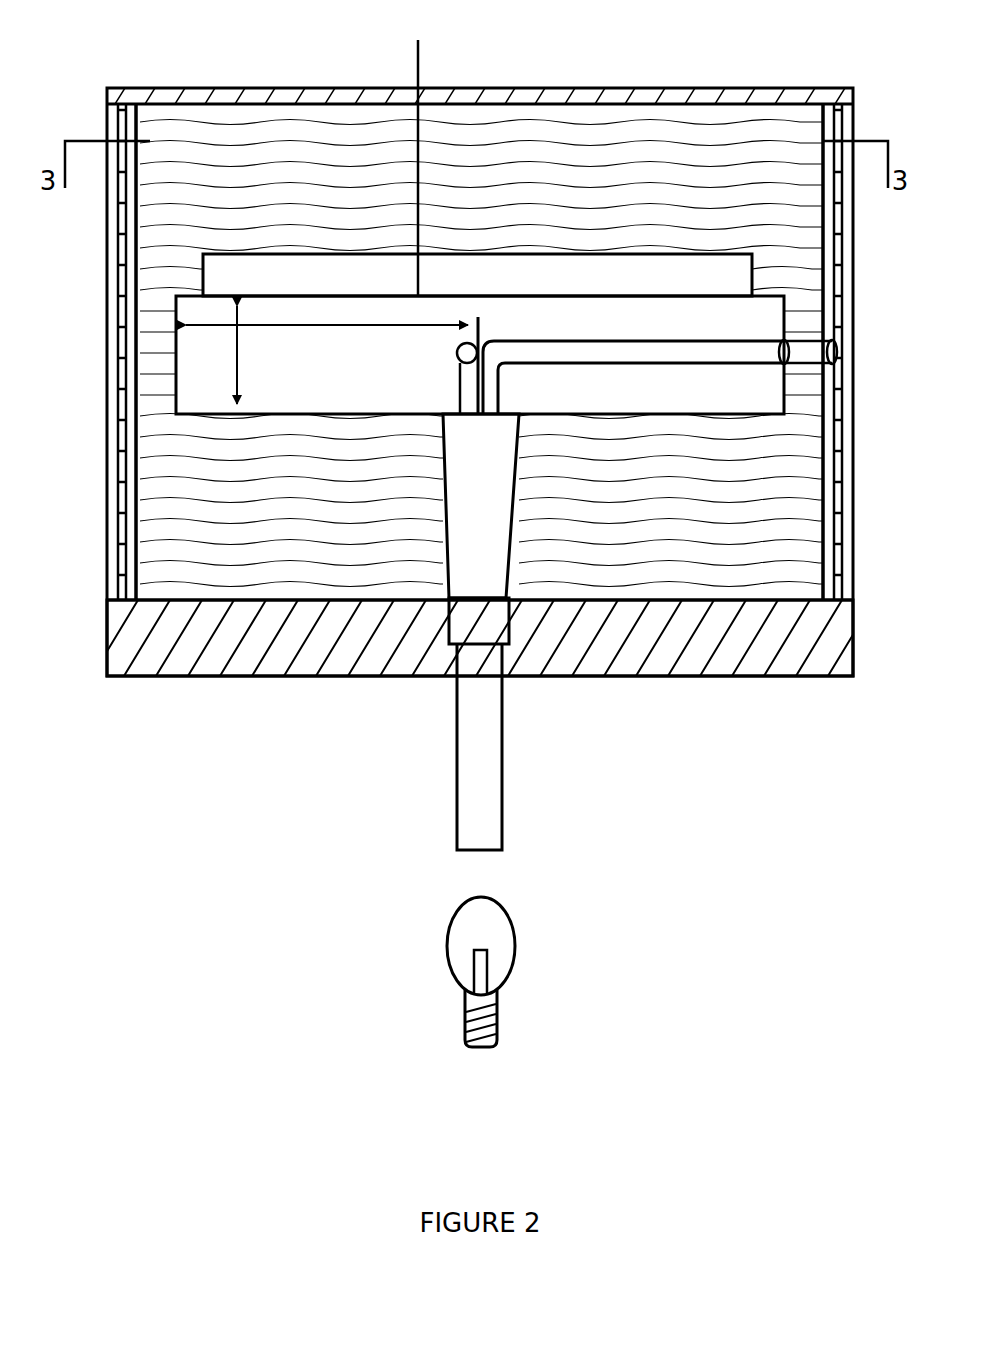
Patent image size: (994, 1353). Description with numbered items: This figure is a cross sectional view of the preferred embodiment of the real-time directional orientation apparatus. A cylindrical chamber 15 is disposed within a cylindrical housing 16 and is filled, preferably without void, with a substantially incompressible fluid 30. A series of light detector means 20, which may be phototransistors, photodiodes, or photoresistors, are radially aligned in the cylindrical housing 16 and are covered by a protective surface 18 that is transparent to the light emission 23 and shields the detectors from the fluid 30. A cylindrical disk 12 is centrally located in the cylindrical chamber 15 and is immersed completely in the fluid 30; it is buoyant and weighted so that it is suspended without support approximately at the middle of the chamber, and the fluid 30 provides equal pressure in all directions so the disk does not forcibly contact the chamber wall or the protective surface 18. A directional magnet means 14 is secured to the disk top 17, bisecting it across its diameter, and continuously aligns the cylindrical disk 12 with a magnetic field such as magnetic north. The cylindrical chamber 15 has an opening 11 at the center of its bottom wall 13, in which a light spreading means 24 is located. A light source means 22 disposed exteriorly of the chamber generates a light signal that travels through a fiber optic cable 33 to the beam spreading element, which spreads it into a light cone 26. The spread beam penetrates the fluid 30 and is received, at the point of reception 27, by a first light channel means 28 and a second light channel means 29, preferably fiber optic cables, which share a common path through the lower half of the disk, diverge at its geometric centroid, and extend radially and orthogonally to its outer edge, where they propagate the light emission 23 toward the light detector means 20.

The opening 11 is at (510, 600).
The cylindrical disk 12 is at (632, 325).
The bottom wall 13 is at (622, 600).
The directional magnet means 14 is at (551, 253).
The cylindrical chamber 15 is at (152, 232).
The cylindrical housing 16 is at (107, 325).
The disk top 17 is at (419, 151).
The protective surface 18 is at (133, 578).
The light detector means 20 is at (126, 465).
The light source means 22 is at (517, 958).
The light emission 23 is at (803, 353).
The light spreading means 24 is at (460, 627).
The light cone 26 is at (478, 507).
The point of reception 27 is at (483, 418).
The first light channel means 28 is at (647, 363).
The second light channel means 29 is at (458, 375).
The fluid 30 is at (275, 205).
The fiber optic cable 33 is at (455, 818).